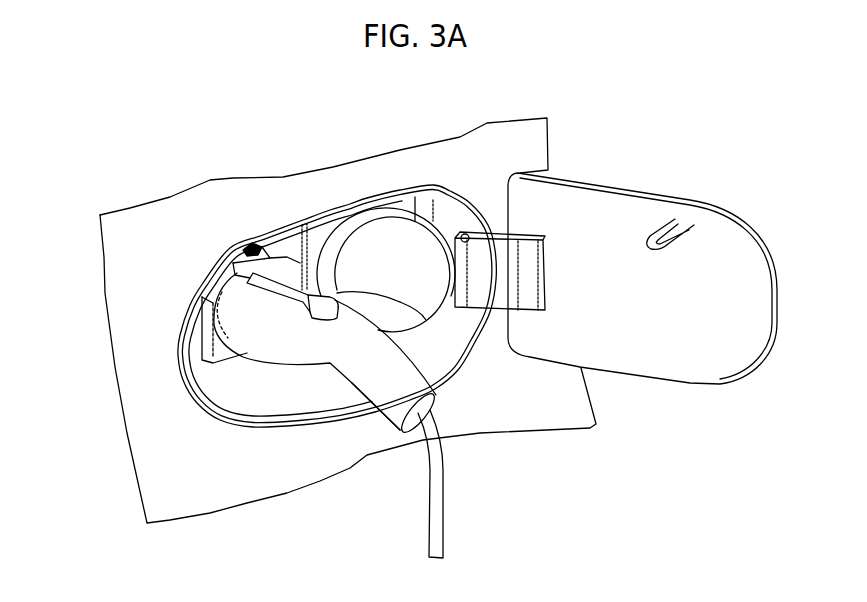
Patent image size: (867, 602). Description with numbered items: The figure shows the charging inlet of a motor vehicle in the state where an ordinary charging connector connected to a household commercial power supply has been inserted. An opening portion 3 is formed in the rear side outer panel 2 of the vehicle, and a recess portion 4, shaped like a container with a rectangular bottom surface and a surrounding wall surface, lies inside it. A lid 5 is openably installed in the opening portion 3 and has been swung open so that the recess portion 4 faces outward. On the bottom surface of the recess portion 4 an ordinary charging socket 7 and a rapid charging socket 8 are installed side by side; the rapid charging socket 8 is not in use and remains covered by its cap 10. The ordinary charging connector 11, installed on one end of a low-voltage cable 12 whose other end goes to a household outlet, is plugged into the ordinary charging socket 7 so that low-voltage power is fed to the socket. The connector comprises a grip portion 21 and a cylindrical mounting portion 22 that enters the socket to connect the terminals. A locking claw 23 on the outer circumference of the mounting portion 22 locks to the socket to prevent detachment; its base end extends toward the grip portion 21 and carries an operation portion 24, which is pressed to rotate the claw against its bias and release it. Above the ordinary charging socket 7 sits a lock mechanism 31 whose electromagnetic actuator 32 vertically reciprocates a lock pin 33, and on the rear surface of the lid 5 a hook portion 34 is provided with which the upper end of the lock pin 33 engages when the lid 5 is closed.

The outer panel 2 is at (144, 232).
The opening portion 3 is at (417, 183).
The recess portion 4 is at (284, 392).
The lid 5 is at (660, 347).
The ordinary charging socket 7 is at (223, 320).
The rapid charging socket 8 is at (357, 237).
The cap 10 is at (393, 252).
The ordinary charging connector 11 is at (350, 397).
The low-voltage cable 12 is at (447, 520).
The grip portion 21 is at (400, 338).
The mounting portion 22 is at (212, 299).
The locking claw 23 is at (230, 273).
The operation portion 24 is at (400, 302).
The lock mechanism 31 is at (272, 243).
The electromagnetic actuator 32 is at (258, 242).
The lock pin 33 is at (238, 267).
The hook portion 34 is at (660, 222).